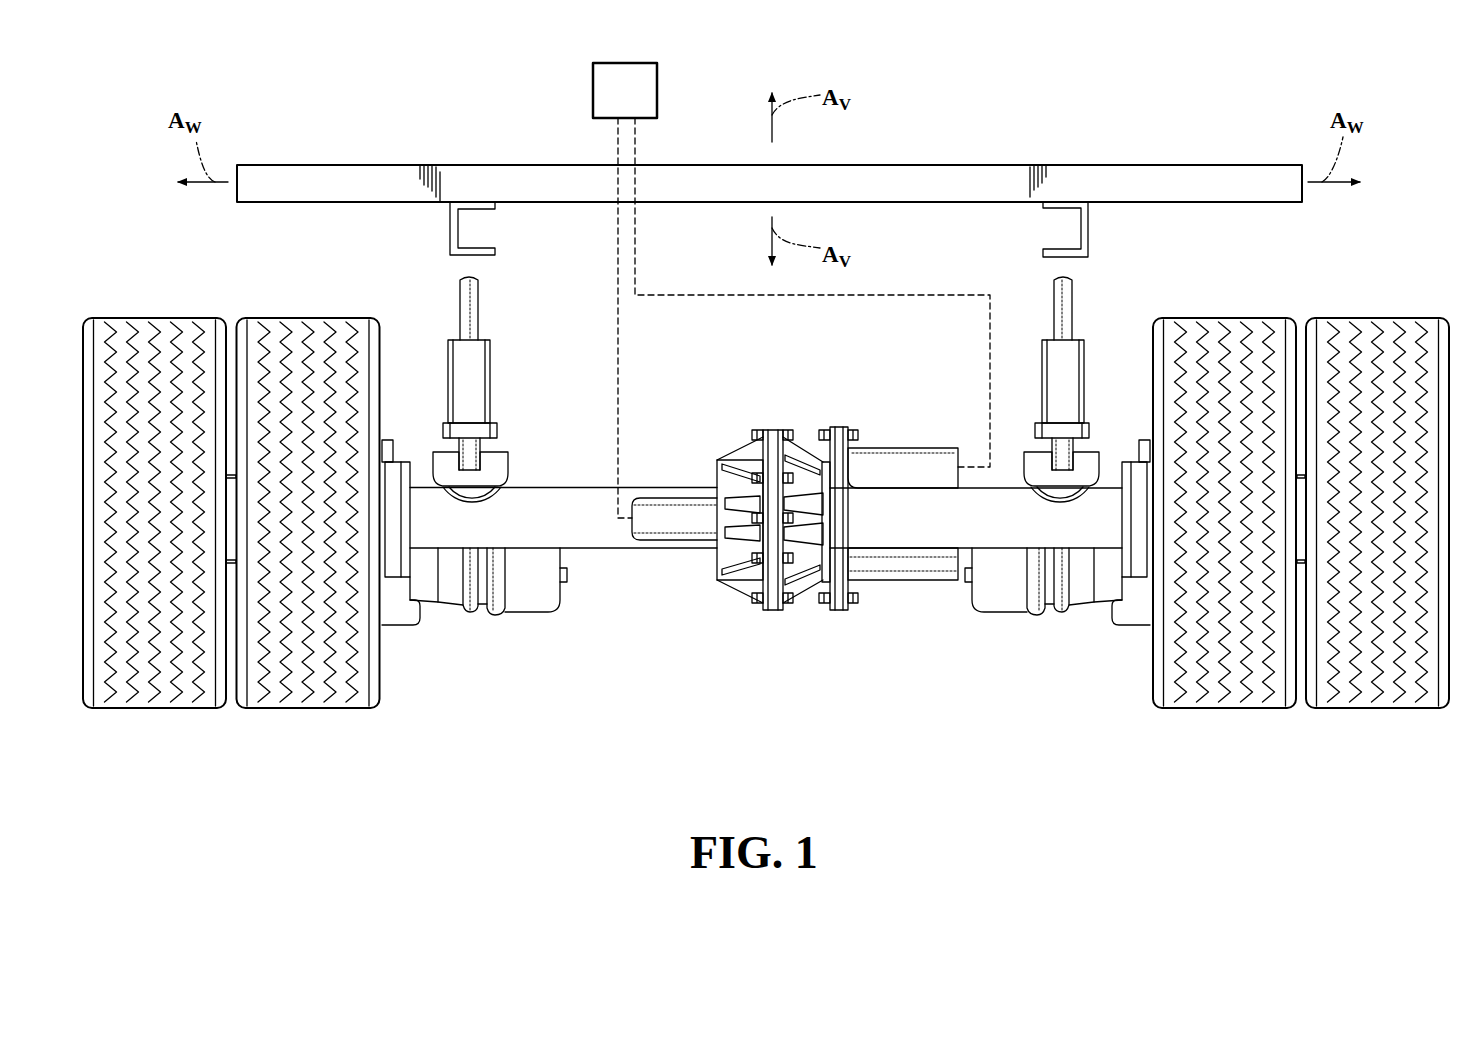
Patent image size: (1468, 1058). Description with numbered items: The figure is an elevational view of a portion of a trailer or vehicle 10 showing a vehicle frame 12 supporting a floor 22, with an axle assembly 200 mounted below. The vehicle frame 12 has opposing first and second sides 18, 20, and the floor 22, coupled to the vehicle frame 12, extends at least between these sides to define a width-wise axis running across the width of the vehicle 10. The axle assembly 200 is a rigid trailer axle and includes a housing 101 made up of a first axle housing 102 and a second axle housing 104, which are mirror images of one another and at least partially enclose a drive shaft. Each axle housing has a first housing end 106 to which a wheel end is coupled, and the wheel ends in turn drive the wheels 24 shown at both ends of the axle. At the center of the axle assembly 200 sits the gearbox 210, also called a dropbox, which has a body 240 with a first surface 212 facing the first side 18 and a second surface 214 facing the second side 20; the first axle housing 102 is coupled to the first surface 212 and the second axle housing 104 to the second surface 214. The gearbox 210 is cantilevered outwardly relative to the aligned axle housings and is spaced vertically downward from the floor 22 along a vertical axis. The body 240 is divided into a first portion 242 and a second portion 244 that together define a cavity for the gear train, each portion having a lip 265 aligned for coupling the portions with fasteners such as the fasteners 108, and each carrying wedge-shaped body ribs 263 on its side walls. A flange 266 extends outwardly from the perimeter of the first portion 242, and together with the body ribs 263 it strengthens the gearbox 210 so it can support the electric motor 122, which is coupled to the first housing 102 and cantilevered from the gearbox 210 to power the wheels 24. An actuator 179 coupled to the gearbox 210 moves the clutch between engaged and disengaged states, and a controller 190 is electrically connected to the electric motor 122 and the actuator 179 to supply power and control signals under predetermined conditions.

The trailer or vehicle 10 is at (1262, 100).
The vehicle frame 12 is at (484, 257).
The first side 18 is at (1088, 223).
The second side 20 is at (450, 222).
The floor 22 is at (1147, 170).
The wheels 24 is at (165, 710).
The housing 101 is at (766, 464).
The first axle housing 102 is at (905, 502).
The second axle housing 104 is at (563, 500).
The first housing end 106 is at (412, 480).
The fastener / bolt 108 is at (717, 553).
The electric motor 122 is at (890, 567).
The actuator 179 is at (677, 512).
The controller 190 is at (643, 104).
The axle assembly 200 is at (750, 540).
The gearbox 210 is at (785, 420).
The first surface 212 is at (827, 553).
The second surface 214 is at (715, 497).
The body 240 is at (776, 490).
The first portion 242 is at (728, 462).
The second portion 244 is at (827, 462).
The body ribs 263 is at (737, 560).
The lip 265 is at (772, 428).
The flange 266 is at (837, 470).